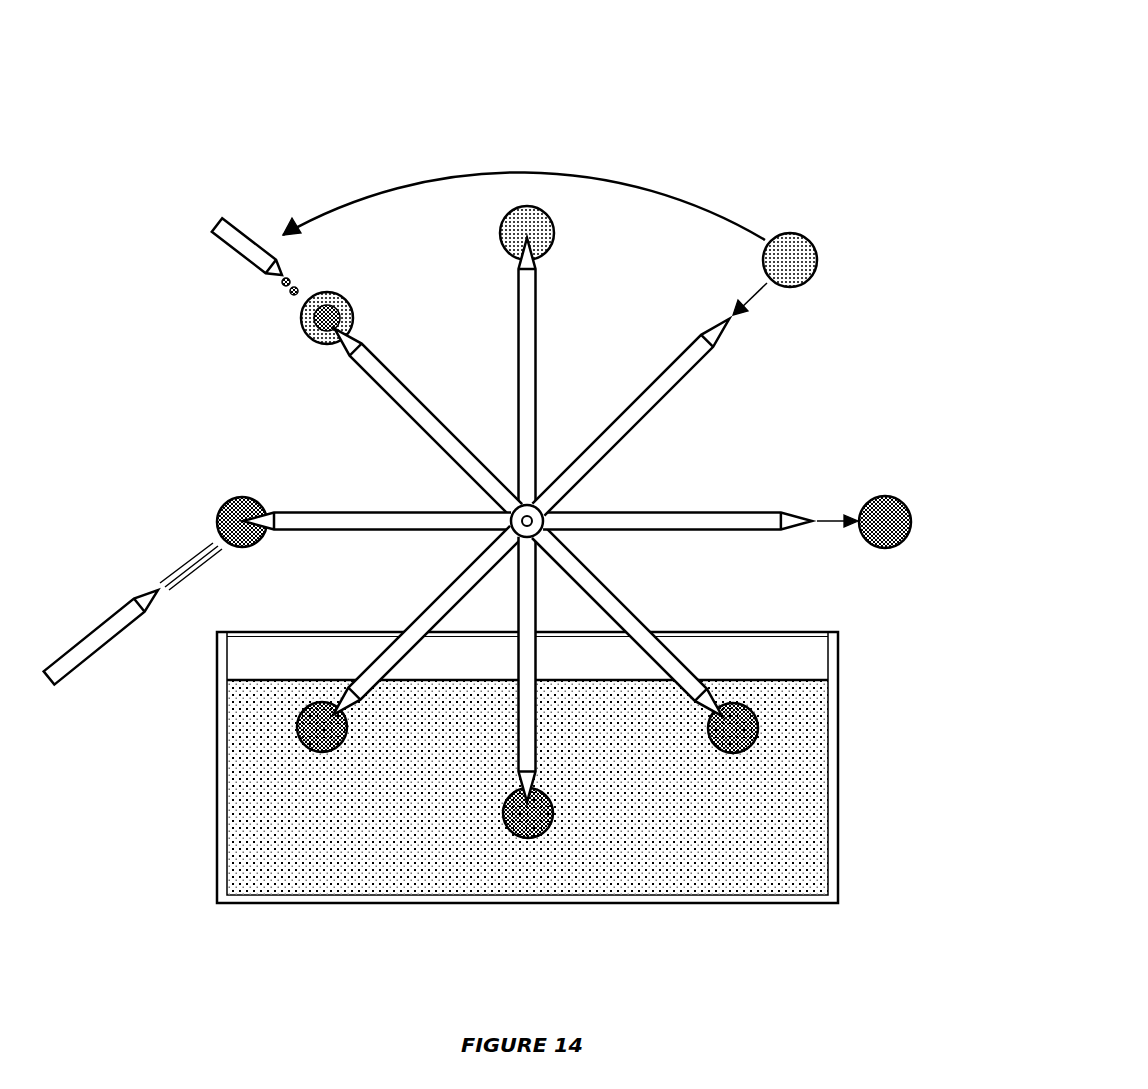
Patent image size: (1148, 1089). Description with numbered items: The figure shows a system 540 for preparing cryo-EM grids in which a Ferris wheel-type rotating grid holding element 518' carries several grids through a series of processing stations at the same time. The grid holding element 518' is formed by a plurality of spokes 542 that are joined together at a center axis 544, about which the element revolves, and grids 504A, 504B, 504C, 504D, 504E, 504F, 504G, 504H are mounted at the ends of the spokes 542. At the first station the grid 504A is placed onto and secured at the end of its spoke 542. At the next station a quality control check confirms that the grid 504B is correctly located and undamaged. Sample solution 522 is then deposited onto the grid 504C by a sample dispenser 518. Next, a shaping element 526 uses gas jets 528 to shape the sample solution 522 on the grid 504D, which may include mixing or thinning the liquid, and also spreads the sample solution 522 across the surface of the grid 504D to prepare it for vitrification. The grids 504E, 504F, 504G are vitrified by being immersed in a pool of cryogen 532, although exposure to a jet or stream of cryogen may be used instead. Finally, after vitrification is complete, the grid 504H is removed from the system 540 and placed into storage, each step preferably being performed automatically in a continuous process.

The system 540 is at (714, 68).
The pool of cryogen 532 is at (262, 806).
The grid 504A is at (812, 243).
The grid 504B is at (550, 250).
The grid 504C is at (346, 296).
The grid 504D is at (218, 518).
The grid 504E is at (346, 746).
The grid 504F is at (553, 808).
The grid 504G is at (757, 753).
The grid 504H is at (912, 506).
The spokes 542 is at (405, 402).
The center axis 544 is at (535, 520).
The dispenser 518 is at (460, 243).
The rotating grid holding element 518' is at (652, 345).
The sample solution 522 is at (280, 290).
The shaping element 526 is at (106, 637).
The gas jets 528 is at (197, 552).